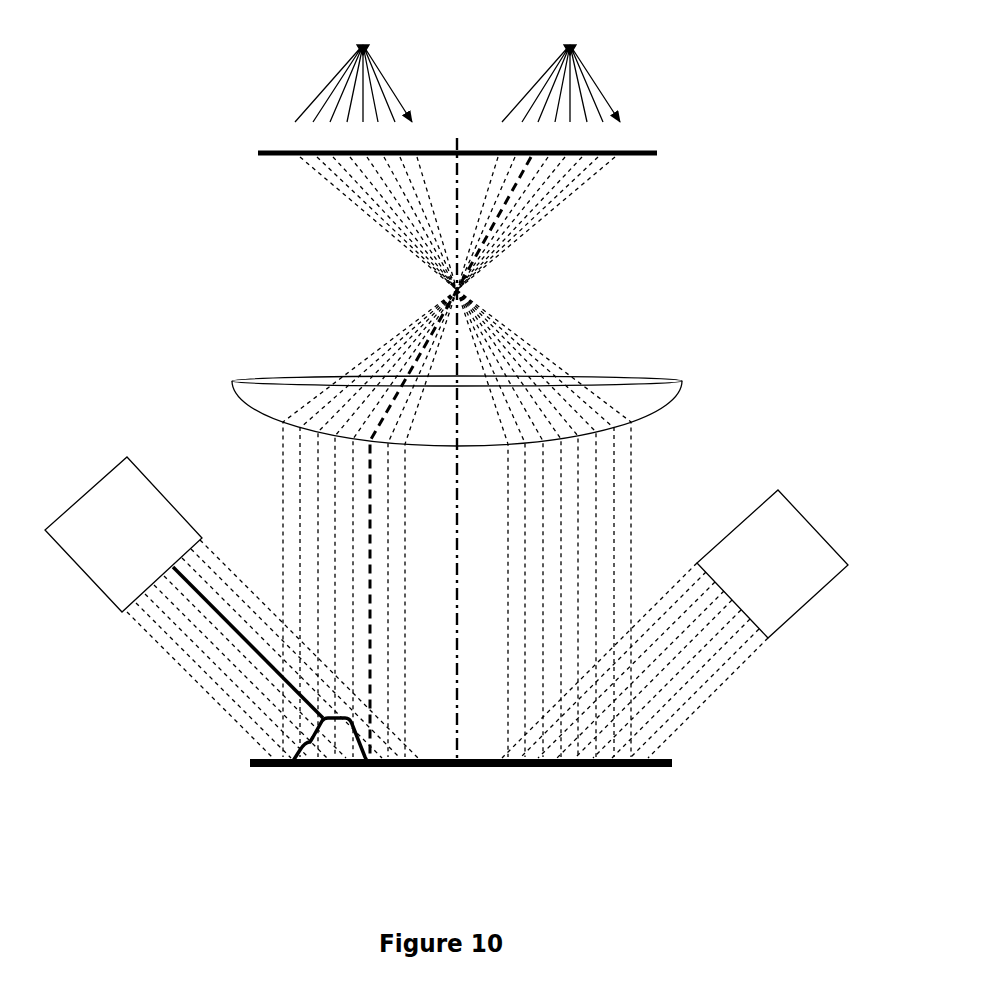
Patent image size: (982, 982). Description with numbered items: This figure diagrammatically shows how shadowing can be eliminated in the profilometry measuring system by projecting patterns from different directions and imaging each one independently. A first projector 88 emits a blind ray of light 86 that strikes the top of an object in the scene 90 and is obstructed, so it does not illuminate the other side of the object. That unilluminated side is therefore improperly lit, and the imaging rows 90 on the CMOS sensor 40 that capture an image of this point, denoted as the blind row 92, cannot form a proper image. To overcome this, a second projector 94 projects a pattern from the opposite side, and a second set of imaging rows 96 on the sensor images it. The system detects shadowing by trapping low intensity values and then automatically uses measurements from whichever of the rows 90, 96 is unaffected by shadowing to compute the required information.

The CMOS sensor 40 is at (250, 153).
The second set of imaging rows 96 is at (353, 63).
The imaging rows / scene 90 is at (137, 739).
The first projector 88 is at (85, 488).
The blind ray of light 86 is at (221, 605).
The second projector 94 is at (810, 512).
The blind row 92 is at (373, 703).